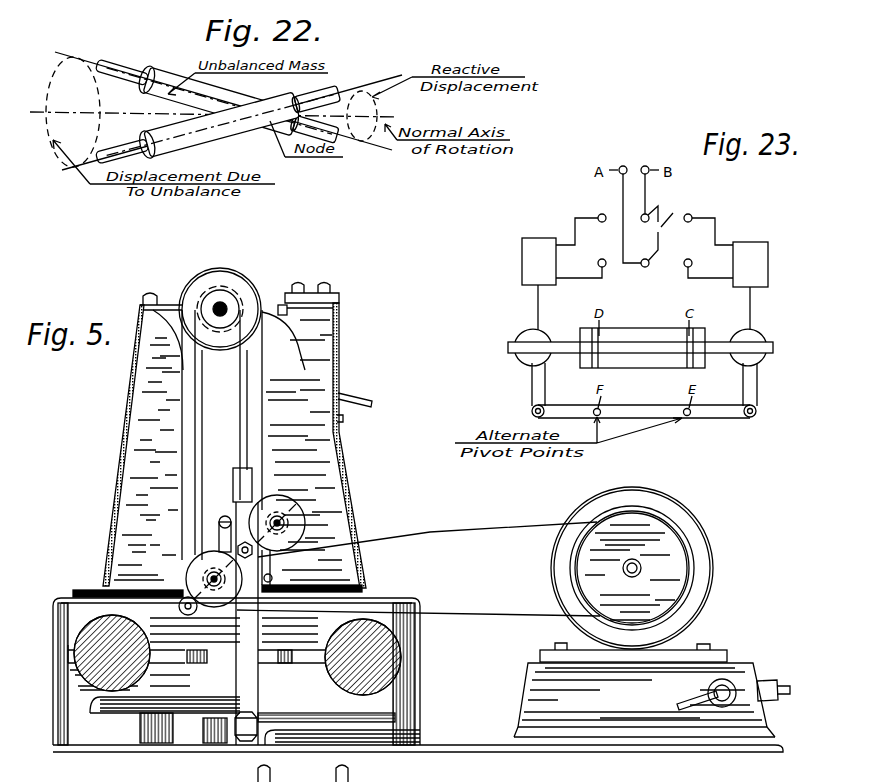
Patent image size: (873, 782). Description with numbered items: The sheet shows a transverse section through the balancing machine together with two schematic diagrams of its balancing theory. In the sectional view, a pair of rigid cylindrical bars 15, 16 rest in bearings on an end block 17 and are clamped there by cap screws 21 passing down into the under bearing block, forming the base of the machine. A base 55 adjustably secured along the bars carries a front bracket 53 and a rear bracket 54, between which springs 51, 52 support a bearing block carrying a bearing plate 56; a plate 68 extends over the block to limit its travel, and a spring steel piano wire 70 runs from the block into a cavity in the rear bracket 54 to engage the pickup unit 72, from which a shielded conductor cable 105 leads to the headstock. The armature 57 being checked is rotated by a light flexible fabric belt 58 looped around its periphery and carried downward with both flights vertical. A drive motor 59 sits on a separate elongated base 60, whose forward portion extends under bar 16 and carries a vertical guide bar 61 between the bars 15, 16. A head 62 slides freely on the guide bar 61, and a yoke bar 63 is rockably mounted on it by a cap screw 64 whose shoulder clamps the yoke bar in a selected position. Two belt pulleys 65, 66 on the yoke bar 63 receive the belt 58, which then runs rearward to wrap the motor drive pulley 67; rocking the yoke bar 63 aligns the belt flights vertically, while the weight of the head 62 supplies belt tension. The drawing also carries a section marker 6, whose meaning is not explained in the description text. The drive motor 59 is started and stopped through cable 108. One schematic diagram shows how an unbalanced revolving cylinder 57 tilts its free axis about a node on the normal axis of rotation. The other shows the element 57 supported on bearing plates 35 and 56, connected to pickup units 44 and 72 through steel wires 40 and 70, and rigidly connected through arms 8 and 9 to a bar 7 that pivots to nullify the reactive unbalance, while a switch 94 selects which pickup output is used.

In FIG. 22, the armature 57 is at (230, 132).
In FIG. 23, the armature 57 is at (643, 341).
In FIG. 5, the armature 57 is at (228, 280).
In FIG. 23, the pickup unit 72 is at (539, 261).
In FIG. 23, the pickup unit 44 is at (750, 264).
In FIG. 23, the switch 94 is at (661, 240).
In FIG. 23, the spring steel piano wire 70 is at (534, 300).
In FIG. 5, the spring steel piano wire 70 is at (276, 303).
In FIG. 23, the steel wire 40 is at (753, 302).
In FIG. 23, the bearing plate 56 is at (543, 339).
In FIG. 23, the bearing plate 35 is at (757, 338).
In FIG. 23, the arm 9 is at (545, 385).
In FIG. 23, the arm 8 is at (758, 386).
In FIG. 23, the bar 7 is at (647, 413).
In FIG. 5, the plate 68 is at (166, 300).
In FIG. 5, the shielded conductor cable 105 is at (360, 397).
In FIG. 5, the flexible fabric belt 58 is at (181, 390).
In FIG. 5, the spring 52 is at (246, 398).
In FIG. 5, the spring 51 is at (203, 433).
In FIG. 5, the front bracket 53 is at (115, 485).
In FIG. 5, the rear bracket 54 is at (338, 475).
In FIG. 5, the slide 6 is at (244, 487).
In FIG. 5, the head 62 is at (225, 520).
In FIG. 5, the belt pulley 65 is at (306, 523).
In FIG. 5, the belt pulley 66 is at (188, 575).
In FIG. 5, the cap screw 64 is at (273, 580).
In FIG. 5, the yoke bar 63 is at (179, 607).
In FIG. 5, the base 55 is at (58, 607).
In FIG. 5, the cap screw 21 is at (190, 670).
In FIG. 5, the bar 15 is at (85, 655).
In FIG. 5, the bar 16 is at (404, 661).
In FIG. 5, the end block 17 is at (416, 692).
In FIG. 5, the guide bar 61 is at (234, 688).
In FIG. 5, the elongated base 60 is at (475, 728).
In FIG. 5, the drive motor 59 is at (712, 553).
In FIG. 5, the motor drive pulley 67 is at (688, 581).
In FIG. 5, the cable 108 is at (690, 699).